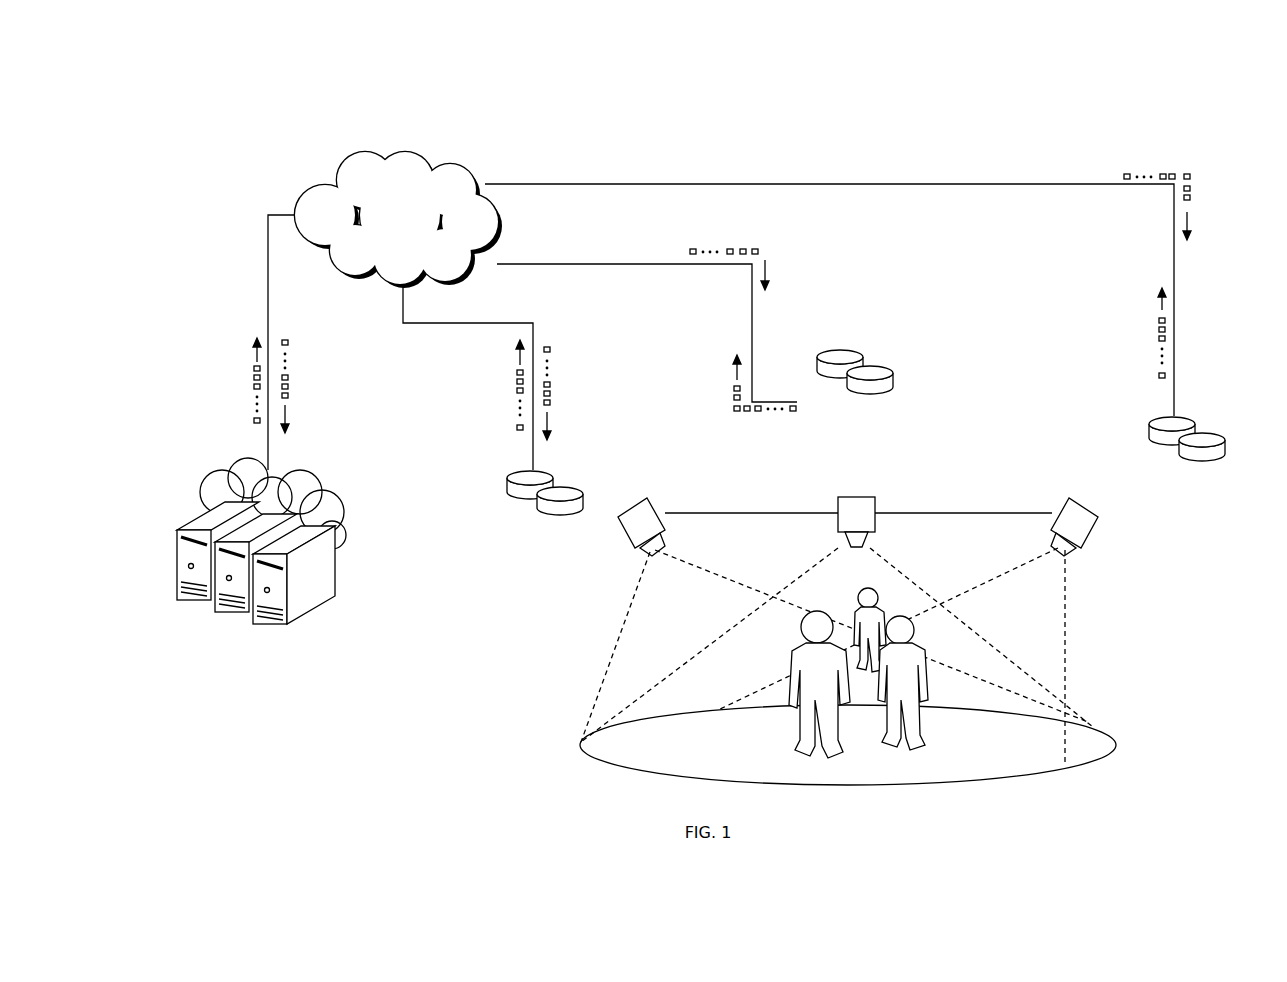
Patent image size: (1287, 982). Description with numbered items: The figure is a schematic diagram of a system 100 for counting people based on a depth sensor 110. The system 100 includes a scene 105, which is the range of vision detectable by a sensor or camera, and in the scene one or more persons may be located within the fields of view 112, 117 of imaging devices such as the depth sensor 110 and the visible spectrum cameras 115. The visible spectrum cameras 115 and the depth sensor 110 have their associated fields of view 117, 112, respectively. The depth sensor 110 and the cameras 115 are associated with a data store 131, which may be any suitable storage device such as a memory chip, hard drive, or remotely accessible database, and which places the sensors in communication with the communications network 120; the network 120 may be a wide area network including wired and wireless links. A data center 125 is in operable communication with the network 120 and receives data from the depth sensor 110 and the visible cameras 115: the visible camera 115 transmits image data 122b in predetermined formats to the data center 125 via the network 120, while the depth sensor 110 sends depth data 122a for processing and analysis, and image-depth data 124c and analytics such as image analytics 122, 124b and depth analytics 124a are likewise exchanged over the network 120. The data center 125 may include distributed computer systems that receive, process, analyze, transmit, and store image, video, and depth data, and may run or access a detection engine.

The system 100 is at (1008, 122).
The network 120 is at (380, 243).
The analytics / image analytics 122 is at (255, 378).
The image-depth data 124c is at (292, 347).
The image data 122b is at (515, 385).
The image analytics 124b is at (553, 350).
The depth analytics 124a is at (733, 250).
The depth data 122a is at (733, 410).
The data store 131 is at (567, 483).
The data center 125 is at (310, 620).
The depth sensor 110 is at (860, 497).
The visible spectrum camera 115 is at (654, 498).
The field of view of visible spectrum camera 117 is at (692, 588).
The field of view of depth sensor 112 is at (860, 582).
The scene 105 is at (882, 767).